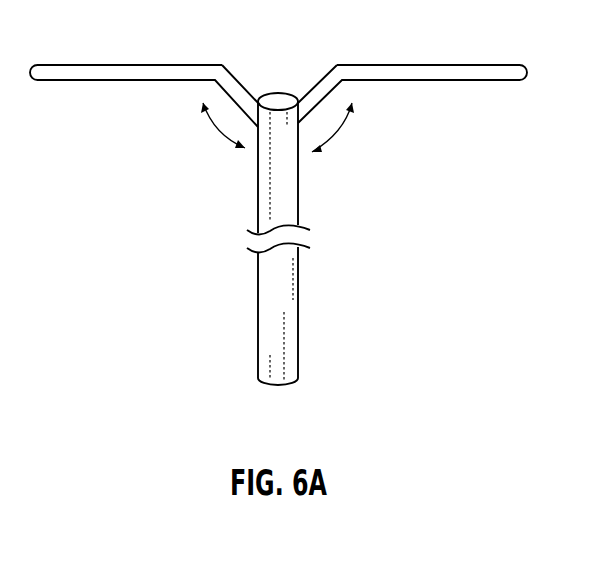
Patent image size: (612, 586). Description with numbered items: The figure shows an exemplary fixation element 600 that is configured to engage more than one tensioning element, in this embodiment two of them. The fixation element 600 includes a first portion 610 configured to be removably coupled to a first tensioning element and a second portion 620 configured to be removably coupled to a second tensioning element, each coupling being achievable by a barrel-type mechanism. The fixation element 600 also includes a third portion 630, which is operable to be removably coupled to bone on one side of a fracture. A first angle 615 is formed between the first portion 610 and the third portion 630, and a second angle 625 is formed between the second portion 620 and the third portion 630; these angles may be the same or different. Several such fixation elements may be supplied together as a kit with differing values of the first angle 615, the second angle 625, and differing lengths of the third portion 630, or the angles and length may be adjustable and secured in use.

The fixation element 600 is at (278, 196).
The first portion 610 is at (117, 73).
The second portion 620 is at (448, 72).
The first angle 615 is at (218, 132).
The second angle 625 is at (340, 130).
The third portion 630 is at (298, 327).